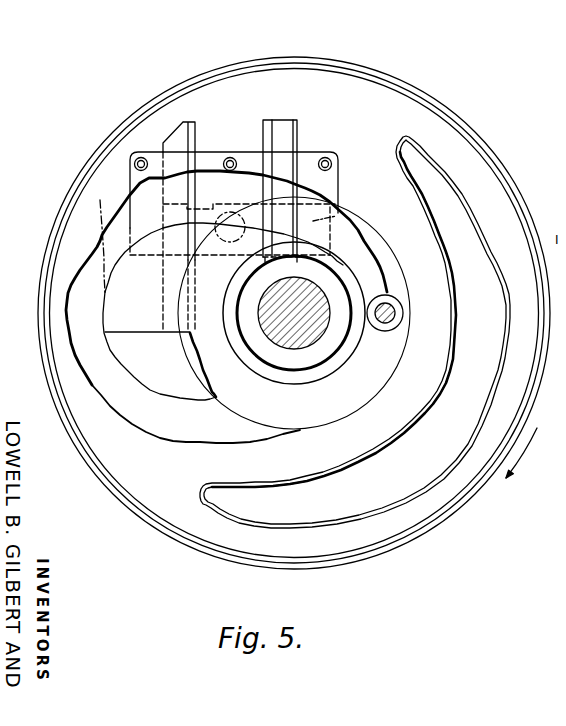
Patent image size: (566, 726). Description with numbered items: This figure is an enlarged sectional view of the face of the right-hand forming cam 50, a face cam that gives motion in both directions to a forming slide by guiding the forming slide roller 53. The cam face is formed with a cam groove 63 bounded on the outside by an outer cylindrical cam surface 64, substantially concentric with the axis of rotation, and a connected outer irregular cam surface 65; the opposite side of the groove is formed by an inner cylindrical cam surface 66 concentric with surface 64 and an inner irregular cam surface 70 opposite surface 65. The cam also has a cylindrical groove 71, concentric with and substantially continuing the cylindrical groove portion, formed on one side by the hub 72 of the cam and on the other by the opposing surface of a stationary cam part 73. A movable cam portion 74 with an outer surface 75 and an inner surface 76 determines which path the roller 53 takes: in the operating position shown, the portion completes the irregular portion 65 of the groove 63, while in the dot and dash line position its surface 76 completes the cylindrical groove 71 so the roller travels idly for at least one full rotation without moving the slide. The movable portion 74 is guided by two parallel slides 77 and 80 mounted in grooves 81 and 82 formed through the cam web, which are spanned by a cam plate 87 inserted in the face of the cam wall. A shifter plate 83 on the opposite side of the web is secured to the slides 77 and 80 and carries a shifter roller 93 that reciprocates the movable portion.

The cam 50 is at (423, 510).
The forming slide roller 53 is at (398, 306).
The cam groove 63 is at (122, 393).
The outer cylindrical cam surface 64 is at (362, 394).
The outer irregular cam surface 65 is at (80, 368).
The inner cylindrical cam surface 66 is at (355, 275).
The inner irregular cam surface 70 is at (107, 334).
The cylindrical groove 71 is at (233, 372).
The hub 72 is at (337, 270).
The stationary cam part 73 is at (137, 360).
The movable cam portion 74 is at (125, 273).
The outer surface 75 is at (132, 246).
The inner surface 76 is at (208, 292).
The slide 77 is at (180, 196).
The slide 80 is at (278, 190).
The groove 81 is at (186, 137).
The groove 82 is at (290, 137).
The shifter plate 83 is at (330, 215).
The cam plate 87 is at (332, 176).
The shifter roller 93 is at (262, 208).